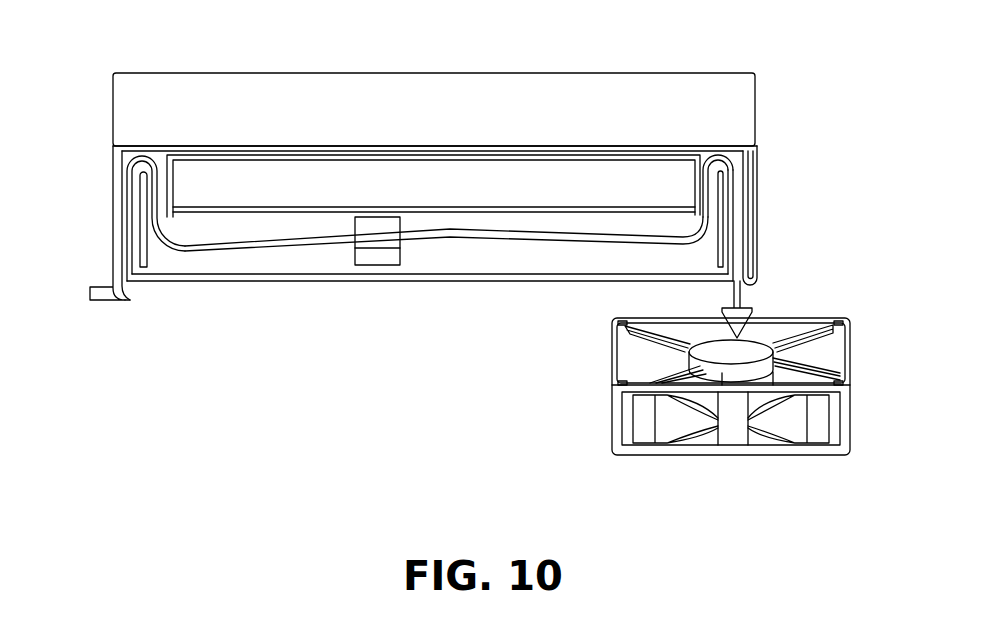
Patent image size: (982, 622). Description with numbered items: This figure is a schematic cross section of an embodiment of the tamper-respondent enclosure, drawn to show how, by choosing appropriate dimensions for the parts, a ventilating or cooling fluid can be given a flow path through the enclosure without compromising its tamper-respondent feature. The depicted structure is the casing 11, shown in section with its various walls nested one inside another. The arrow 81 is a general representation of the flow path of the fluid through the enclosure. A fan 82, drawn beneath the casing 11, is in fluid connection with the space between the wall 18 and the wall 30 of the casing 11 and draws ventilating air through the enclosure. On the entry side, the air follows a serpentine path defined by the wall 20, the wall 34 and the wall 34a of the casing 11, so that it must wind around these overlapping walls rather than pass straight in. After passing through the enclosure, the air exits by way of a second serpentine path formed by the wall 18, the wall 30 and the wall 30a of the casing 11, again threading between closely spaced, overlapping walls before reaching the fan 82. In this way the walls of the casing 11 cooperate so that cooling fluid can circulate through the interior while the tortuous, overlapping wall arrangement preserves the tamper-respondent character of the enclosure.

The casing 11 is at (470, 88).
The wall 18 is at (722, 193).
The wall 20 is at (147, 252).
The wall 30 is at (752, 241).
The wall 30a is at (703, 153).
The wall 34 is at (120, 265).
The wall 34a is at (172, 217).
The arrow 81 is at (413, 240).
The fan 82 is at (630, 396).